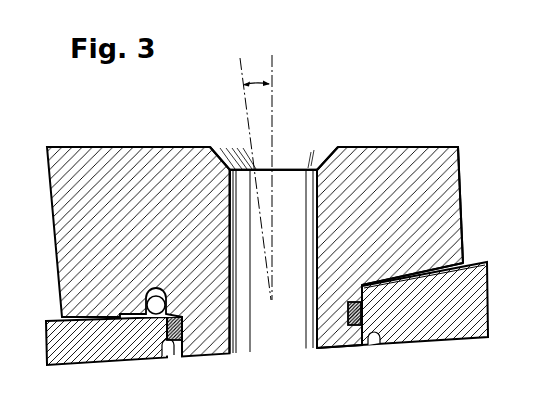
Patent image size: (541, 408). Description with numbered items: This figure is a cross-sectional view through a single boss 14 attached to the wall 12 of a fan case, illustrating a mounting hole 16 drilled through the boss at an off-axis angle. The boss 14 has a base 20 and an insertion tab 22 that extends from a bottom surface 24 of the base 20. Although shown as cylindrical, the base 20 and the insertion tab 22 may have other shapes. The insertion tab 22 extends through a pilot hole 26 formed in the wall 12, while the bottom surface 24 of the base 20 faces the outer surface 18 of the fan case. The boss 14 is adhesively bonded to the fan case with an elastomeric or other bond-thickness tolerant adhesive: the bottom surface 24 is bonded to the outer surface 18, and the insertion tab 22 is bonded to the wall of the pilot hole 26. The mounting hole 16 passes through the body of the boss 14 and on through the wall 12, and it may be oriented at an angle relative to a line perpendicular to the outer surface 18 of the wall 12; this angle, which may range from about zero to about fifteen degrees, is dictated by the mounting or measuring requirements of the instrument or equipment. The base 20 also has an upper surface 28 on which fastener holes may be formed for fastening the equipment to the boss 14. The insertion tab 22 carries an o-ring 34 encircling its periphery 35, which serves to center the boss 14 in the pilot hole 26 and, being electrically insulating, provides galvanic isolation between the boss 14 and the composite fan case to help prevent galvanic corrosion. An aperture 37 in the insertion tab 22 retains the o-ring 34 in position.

The wall 12 is at (465, 298).
The boss 14 is at (437, 168).
The mounting hole 16 is at (297, 189).
The outer surface 18 is at (447, 263).
The base 20 is at (440, 213).
The insertion tab 22 is at (325, 332).
The bottom surface 24 is at (130, 307).
The pilot hole 26 is at (158, 356).
The upper surface 28 is at (150, 147).
The o-ring 34 is at (348, 320).
The periphery 35 is at (370, 330).
The aperture 37 is at (182, 345).